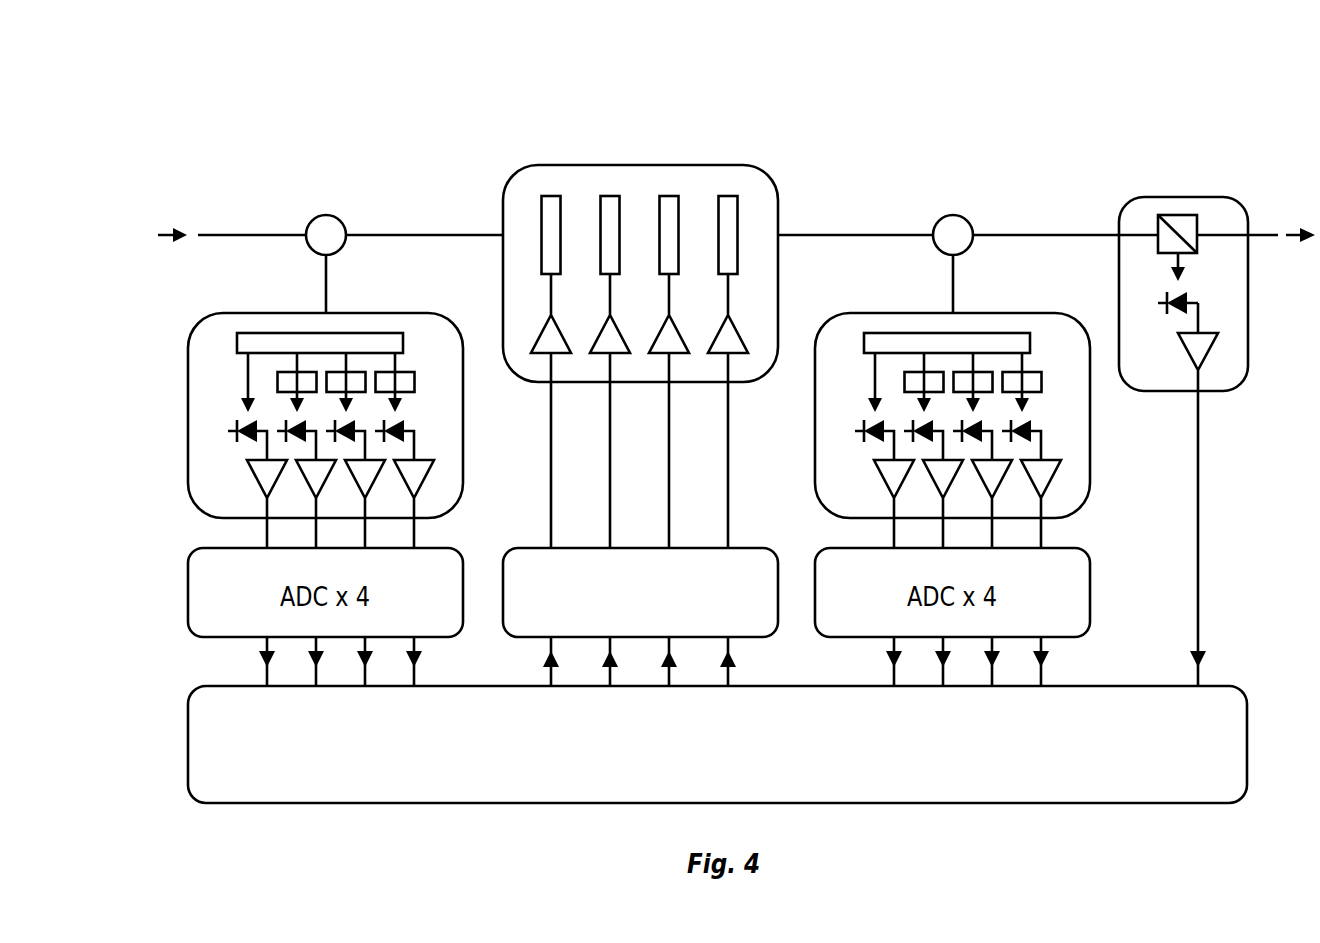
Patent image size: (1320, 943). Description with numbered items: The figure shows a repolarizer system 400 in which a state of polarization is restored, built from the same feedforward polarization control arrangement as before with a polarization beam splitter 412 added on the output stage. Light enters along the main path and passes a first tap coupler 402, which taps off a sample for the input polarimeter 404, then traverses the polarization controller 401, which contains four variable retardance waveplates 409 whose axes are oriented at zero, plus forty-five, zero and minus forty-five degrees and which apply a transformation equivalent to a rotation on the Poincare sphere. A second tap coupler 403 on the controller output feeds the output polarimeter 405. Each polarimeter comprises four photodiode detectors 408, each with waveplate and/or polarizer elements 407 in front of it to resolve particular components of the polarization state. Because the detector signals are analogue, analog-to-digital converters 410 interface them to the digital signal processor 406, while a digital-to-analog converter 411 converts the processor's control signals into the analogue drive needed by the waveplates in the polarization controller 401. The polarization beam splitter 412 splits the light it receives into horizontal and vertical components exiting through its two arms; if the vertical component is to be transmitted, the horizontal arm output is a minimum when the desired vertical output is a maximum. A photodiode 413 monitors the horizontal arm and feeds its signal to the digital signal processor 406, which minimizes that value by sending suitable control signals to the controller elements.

The repolarizer system 400 is at (825, 92).
The polarization controller 401 is at (643, 356).
The tap coupler 402 is at (330, 220).
The tap coupler 403 is at (957, 222).
The input polarimeter 404 is at (212, 333).
The output polarimeter 405 is at (853, 320).
The digital signal processor 406 is at (1230, 760).
The waveplate and/or polarizer elements 407 is at (407, 384).
The photodiode detectors 408 is at (415, 477).
The variable retardance waveplates 409 is at (732, 212).
The analog-to-digital converters 410 is at (212, 600).
The digital-to-analog converter 411 is at (737, 560).
The polarization beam splitter 412 is at (1153, 425).
The photodiode 413 is at (1173, 298).